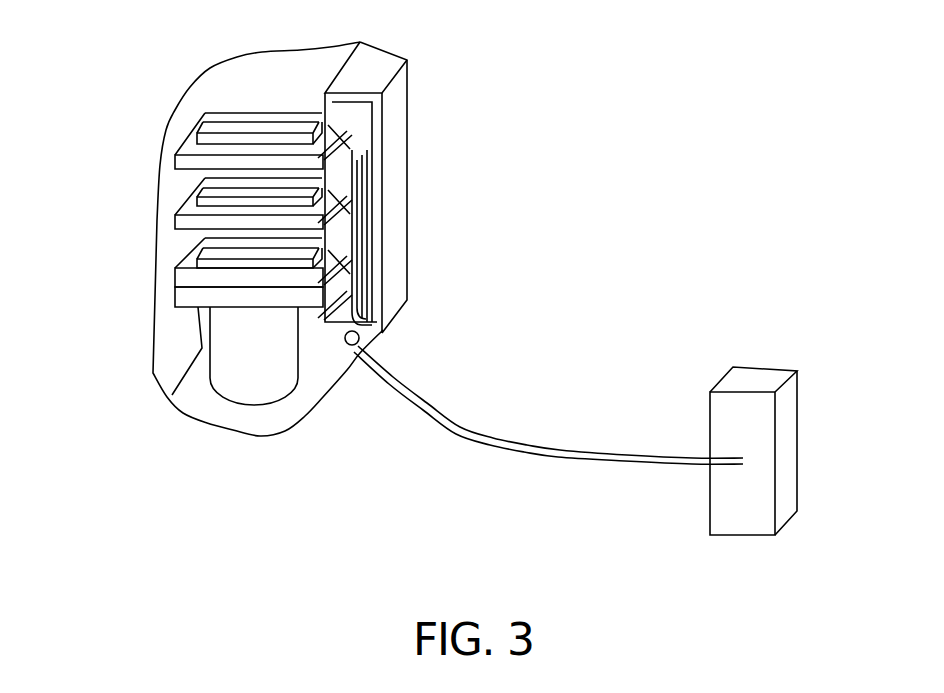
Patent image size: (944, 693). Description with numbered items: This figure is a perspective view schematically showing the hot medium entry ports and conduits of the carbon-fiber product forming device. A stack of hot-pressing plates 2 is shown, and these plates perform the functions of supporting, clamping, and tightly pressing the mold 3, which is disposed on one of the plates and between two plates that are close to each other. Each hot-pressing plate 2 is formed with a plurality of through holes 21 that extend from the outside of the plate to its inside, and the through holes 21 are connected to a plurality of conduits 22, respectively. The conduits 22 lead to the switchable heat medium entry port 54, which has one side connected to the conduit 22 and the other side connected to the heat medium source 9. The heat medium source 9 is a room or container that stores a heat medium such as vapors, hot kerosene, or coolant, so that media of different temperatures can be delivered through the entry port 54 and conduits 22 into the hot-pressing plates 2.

The hot-pressing plate 2 is at (200, 167).
The mold 3 is at (209, 128).
The through hole 21 is at (337, 152).
The conduit 22 is at (355, 190).
The switchable heat medium entry port 54 is at (351, 343).
The heat medium source 9 is at (785, 448).